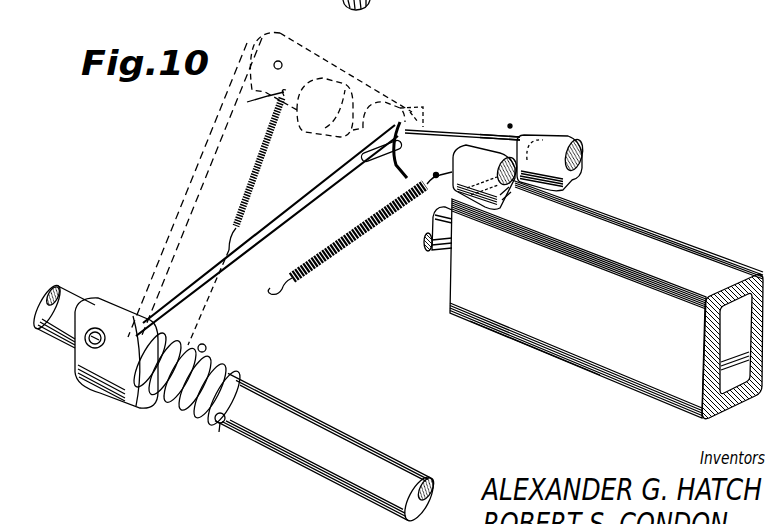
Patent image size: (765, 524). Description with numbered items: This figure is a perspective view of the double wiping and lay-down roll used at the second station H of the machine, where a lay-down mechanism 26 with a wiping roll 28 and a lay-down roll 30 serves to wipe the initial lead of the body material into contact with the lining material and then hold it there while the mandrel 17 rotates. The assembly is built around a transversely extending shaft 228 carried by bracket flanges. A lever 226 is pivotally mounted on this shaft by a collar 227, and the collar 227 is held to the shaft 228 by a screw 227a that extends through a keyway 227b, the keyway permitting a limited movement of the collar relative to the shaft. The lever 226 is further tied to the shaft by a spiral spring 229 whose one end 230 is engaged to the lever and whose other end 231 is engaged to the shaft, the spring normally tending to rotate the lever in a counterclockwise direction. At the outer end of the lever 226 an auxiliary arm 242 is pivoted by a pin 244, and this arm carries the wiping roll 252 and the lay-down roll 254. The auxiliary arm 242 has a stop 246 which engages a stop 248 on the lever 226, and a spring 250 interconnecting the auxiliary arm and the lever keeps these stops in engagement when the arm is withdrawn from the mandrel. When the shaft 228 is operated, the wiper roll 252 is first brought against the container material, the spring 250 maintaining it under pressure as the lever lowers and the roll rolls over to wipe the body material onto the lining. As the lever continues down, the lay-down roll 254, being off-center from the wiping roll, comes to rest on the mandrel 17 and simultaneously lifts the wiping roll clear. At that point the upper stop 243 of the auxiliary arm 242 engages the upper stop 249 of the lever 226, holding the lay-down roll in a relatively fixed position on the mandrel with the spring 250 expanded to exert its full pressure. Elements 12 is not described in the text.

The clip bracket 12 is at (428, 247).
The mandrel 17 is at (525, 342).
The lay-down mechanism 26 is at (508, 128).
The wiping roll 28 is at (477, 148).
The lay-down roll 30 is at (537, 127).
The second station H is at (630, 230).
The lever 226 is at (270, 300).
The collar 227 is at (114, 303).
The screw 227a is at (88, 342).
The keyway 227b is at (95, 346).
The shaft 228 is at (313, 426).
The spiral spring 229 is at (240, 376).
The spring end 230 is at (210, 348).
The spring end 231 is at (221, 427).
The auxiliary arm 242 is at (456, 133).
The upper stop 243 is at (413, 117).
The pin 244 is at (423, 132).
The stop 246 is at (418, 186).
The stop 248 is at (386, 168).
The upper stop 249 is at (381, 162).
The spring 250 is at (351, 245).
The wiping roll 252 is at (583, 150).
The lay-down roll 254 is at (513, 184).